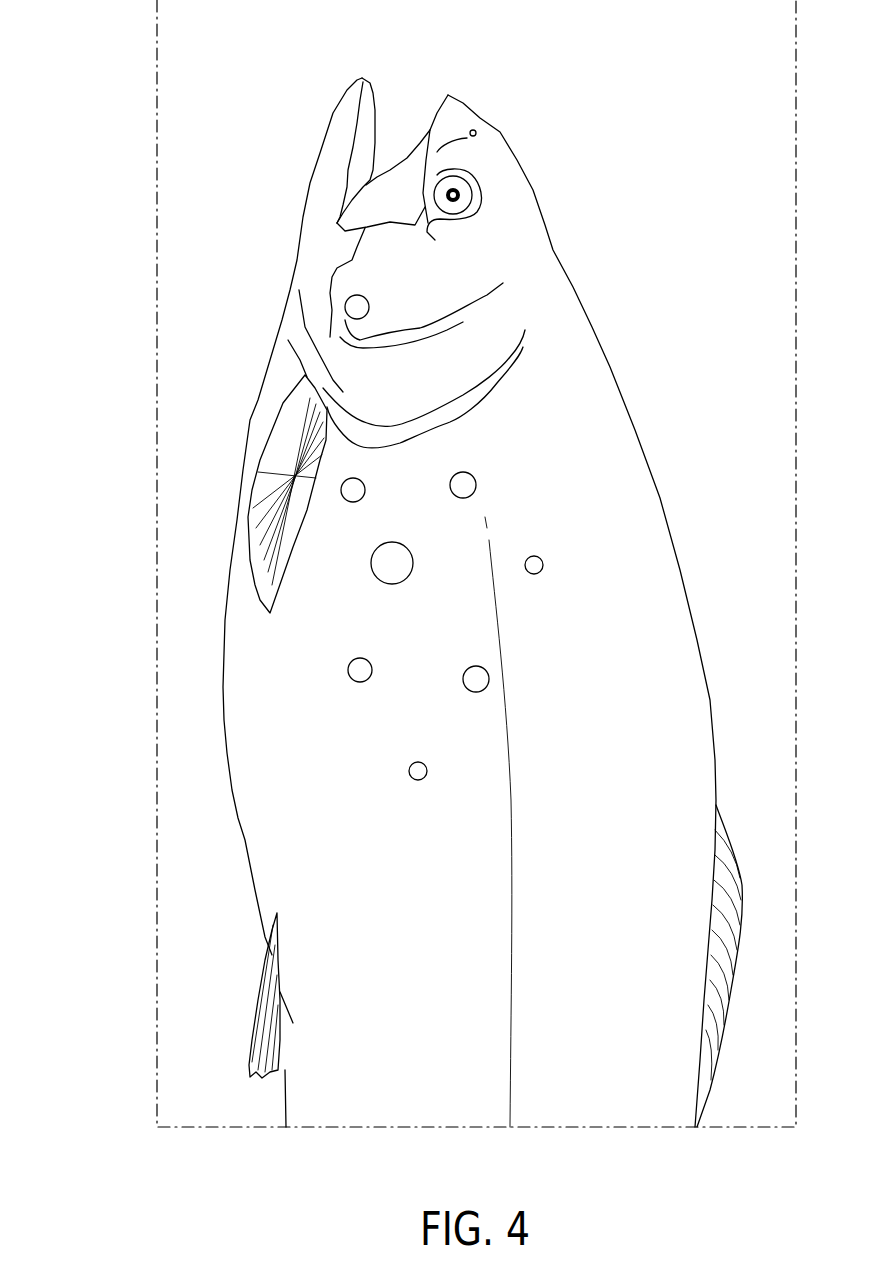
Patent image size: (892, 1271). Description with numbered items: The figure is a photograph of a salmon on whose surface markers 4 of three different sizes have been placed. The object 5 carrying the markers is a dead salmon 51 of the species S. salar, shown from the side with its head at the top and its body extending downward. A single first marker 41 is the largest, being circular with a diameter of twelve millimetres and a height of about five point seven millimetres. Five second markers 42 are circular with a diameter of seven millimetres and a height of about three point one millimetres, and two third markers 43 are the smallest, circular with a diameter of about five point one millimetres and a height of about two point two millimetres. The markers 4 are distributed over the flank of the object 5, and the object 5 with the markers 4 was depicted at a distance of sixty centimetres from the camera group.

The markers 4 is at (118, 537).
The first marker 41 is at (392, 563).
The second marker 42 is at (357, 307).
The third marker 43 is at (534, 565).
The object 5 is at (317, 973).
The dead salmon 51 is at (318, 882).